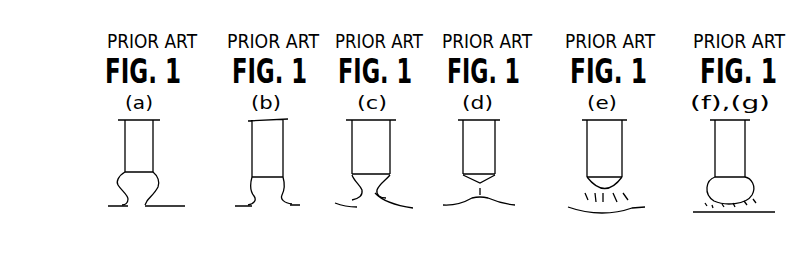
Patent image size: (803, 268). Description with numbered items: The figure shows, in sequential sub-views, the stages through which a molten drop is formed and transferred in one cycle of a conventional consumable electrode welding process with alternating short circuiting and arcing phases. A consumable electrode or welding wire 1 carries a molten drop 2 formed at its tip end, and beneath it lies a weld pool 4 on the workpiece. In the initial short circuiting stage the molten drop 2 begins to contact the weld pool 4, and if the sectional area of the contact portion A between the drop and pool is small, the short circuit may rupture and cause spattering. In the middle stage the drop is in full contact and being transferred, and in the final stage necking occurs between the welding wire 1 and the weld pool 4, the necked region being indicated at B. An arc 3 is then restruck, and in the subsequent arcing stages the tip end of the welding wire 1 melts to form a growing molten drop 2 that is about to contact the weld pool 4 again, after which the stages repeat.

The consumable electrode 1 is at (147, 153).
The molten drop 2 is at (123, 188).
The arc 3 is at (473, 194).
The weld pool 4 is at (177, 204).
The contact portion A is at (154, 201).
The void B is at (355, 190).